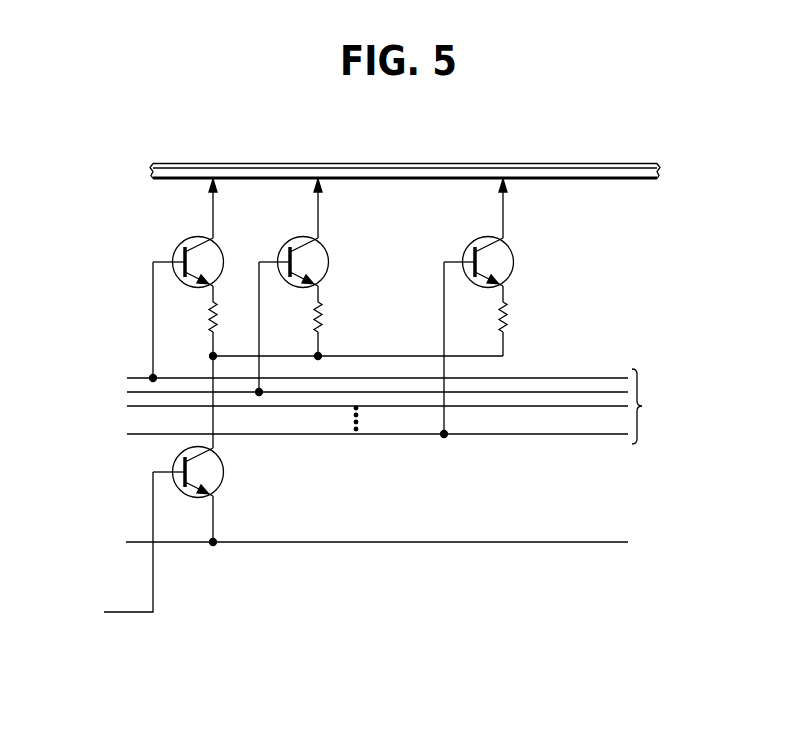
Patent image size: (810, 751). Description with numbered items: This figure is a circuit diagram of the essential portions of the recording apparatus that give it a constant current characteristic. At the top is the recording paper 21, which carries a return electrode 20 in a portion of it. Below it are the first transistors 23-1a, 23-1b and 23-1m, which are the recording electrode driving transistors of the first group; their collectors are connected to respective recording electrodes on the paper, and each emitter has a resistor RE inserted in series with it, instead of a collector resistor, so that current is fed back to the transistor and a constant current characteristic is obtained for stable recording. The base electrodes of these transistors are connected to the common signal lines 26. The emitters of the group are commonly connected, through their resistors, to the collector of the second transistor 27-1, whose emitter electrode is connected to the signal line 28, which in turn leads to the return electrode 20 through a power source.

The return electrode 20 is at (478, 163).
The recording paper 21 is at (380, 168).
The first transistor 23-1a is at (213, 243).
The first transistor 23-1b is at (318, 243).
The first transistor 23-1m is at (504, 243).
The common signal lines 26 is at (402, 406).
The second transistor 27-1 is at (224, 470).
The signal line 28 is at (475, 541).